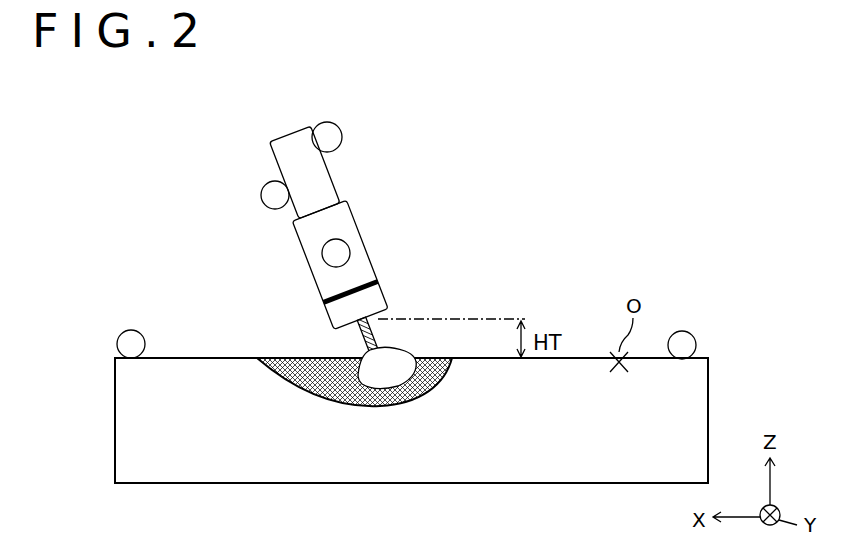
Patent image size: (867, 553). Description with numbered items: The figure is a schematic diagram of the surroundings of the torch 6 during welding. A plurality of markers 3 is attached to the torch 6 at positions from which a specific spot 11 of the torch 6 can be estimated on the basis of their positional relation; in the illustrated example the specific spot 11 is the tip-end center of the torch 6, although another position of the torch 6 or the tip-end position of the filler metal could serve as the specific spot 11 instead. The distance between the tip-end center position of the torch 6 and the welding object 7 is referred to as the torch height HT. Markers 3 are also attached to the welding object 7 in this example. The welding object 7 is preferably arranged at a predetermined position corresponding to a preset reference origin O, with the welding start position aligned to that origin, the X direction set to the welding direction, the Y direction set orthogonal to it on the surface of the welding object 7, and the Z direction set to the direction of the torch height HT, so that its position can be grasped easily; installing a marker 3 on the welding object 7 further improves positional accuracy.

The marker 3 is at (341, 132).
The torch 6 is at (332, 186).
The welding object 7 is at (433, 483).
The specific spot 11 is at (360, 320).